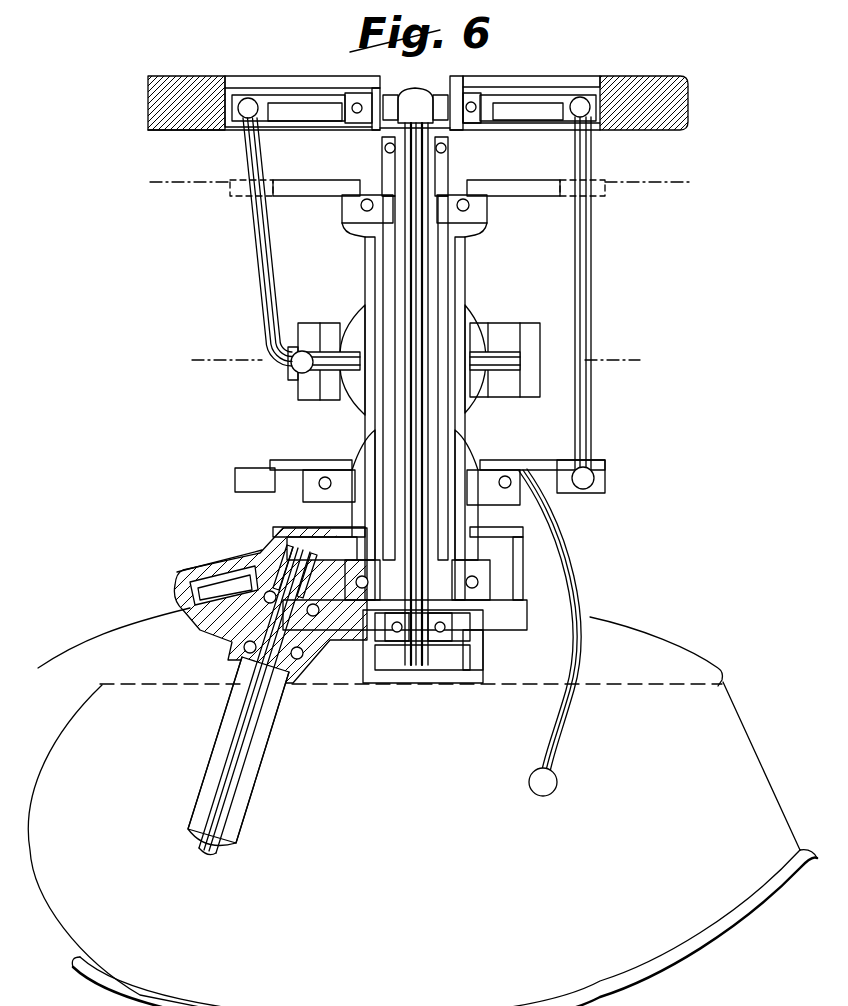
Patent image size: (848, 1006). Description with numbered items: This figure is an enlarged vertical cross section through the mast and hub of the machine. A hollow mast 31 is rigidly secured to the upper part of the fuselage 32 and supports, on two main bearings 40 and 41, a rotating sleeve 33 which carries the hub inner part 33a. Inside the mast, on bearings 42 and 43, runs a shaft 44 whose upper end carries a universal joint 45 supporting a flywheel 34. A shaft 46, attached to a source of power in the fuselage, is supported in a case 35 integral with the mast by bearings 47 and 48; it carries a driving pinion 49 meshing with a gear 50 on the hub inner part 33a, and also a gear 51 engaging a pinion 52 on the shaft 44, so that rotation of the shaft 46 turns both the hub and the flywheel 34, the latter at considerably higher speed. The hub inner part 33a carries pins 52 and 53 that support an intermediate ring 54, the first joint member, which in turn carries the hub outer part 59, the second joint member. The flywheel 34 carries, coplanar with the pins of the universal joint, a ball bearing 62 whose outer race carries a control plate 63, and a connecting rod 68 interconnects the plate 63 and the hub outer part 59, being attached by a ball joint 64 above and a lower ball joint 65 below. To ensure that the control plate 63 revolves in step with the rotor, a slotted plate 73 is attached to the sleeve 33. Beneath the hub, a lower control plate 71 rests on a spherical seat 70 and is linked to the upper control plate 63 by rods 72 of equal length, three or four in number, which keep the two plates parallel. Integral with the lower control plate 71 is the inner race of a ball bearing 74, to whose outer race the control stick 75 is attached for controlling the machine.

The hollow mast 31 is at (440, 244).
The fuselage 32 is at (666, 652).
The rotating sleeve 33 is at (467, 274).
The hub inner part 33a is at (472, 318).
The flywheel 34 is at (648, 78).
The case 35 is at (527, 615).
The main bearing 40 is at (488, 213).
The main bearing 41 is at (493, 585).
The bearing 42 is at (446, 148).
The bearing 43 is at (484, 640).
The shaft 44 is at (448, 176).
The universal joint 45 is at (440, 95).
The shaft 46 is at (265, 726).
The bearing 47 is at (262, 584).
The bearing 48 is at (240, 642).
The driving pinion 49 is at (285, 562).
The gear 50 is at (512, 556).
The gear 51 is at (190, 594).
The pinion 52 is at (393, 678).
The pin 53 is at (532, 346).
The intermediate ring 54 is at (330, 400).
The hub outer part 59 is at (296, 396).
The ball bearing 62 is at (357, 120).
The control plate 63 is at (318, 122).
The ball joint 64 is at (240, 118).
The lower ball joint 65 is at (290, 374).
The connecting rod 68 is at (262, 268).
The spherical seat 70 is at (478, 446).
The lower control plate 71 is at (512, 462).
The rods 72 is at (592, 262).
The slotted plate 73 is at (515, 182).
The ball bearing 74 is at (556, 458).
The control stick 75 is at (560, 510).